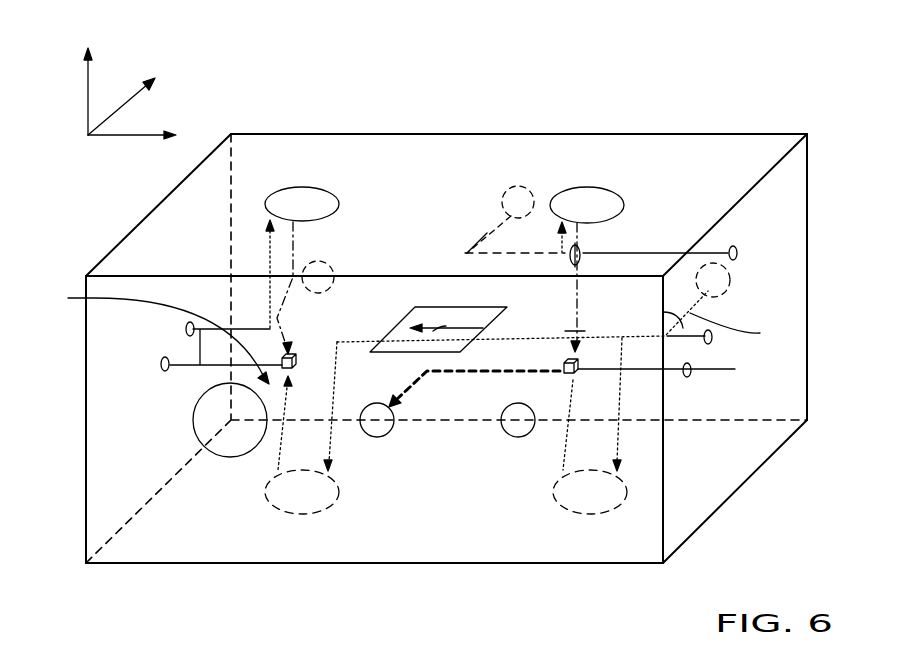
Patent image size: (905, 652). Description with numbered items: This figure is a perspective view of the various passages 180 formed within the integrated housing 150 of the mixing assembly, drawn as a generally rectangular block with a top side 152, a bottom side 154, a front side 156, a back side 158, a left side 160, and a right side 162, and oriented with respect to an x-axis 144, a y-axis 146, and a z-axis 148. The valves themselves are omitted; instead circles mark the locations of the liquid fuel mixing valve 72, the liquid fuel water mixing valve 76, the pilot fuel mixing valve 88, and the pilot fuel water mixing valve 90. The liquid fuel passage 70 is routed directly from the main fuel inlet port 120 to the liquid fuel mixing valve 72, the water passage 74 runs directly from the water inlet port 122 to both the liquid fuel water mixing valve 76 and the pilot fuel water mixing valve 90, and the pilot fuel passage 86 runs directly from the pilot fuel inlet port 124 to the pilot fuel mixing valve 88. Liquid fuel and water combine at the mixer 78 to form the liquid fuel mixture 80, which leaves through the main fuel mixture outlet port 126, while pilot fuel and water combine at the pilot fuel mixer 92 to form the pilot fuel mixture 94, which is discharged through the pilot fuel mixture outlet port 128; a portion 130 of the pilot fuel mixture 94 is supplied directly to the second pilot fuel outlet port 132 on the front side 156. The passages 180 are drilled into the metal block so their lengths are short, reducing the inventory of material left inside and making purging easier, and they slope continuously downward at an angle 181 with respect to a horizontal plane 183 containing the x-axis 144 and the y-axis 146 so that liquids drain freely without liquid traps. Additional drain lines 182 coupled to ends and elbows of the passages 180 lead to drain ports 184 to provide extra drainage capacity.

The liquid fuel passage 70 is at (268, 258).
The liquid fuel mixing valve 72 is at (302, 187).
The water passage 74 is at (760, 333).
The liquid fuel water mixing valve 76 is at (302, 515).
The mixer 78 is at (296, 351).
The liquid fuel mixture 80 is at (162, 303).
The pilot fuel passage 86 is at (487, 233).
The pilot fuel mixing valve 88 is at (590, 187).
The pilot fuel water mixing valve 90 is at (590, 515).
The pilot fuel mixer 92 is at (563, 358).
The pilot fuel mixture 94 is at (568, 382).
The main fuel inlet port 120 is at (330, 265).
The water inlet port 122 is at (738, 258).
The pilot fuel inlet port 124 is at (518, 186).
The main fuel mixture outlet port 126 is at (196, 428).
The pilot fuel mixture outlet port 128 is at (518, 437).
The portion of the pilot fuel mixture 130 is at (453, 374).
The second pilot fuel outlet port 132 is at (378, 437).
The x-axis 144 is at (125, 137).
The y-axis 146 is at (114, 106).
The z-axis 148 is at (88, 99).
The integrated housing 150 is at (700, 134).
The top side 152 is at (773, 143).
The bottom side 154 is at (708, 482).
The front side 156 is at (105, 392).
The back side 158 is at (770, 283).
The left side 160 is at (157, 253).
The right side 162 is at (775, 383).
The passages 180 is at (582, 65).
The angle 181 is at (433, 331).
The drain lines 182 is at (200, 368).
The horizontal plane 183 is at (428, 322).
The drain ports 184 is at (162, 360).